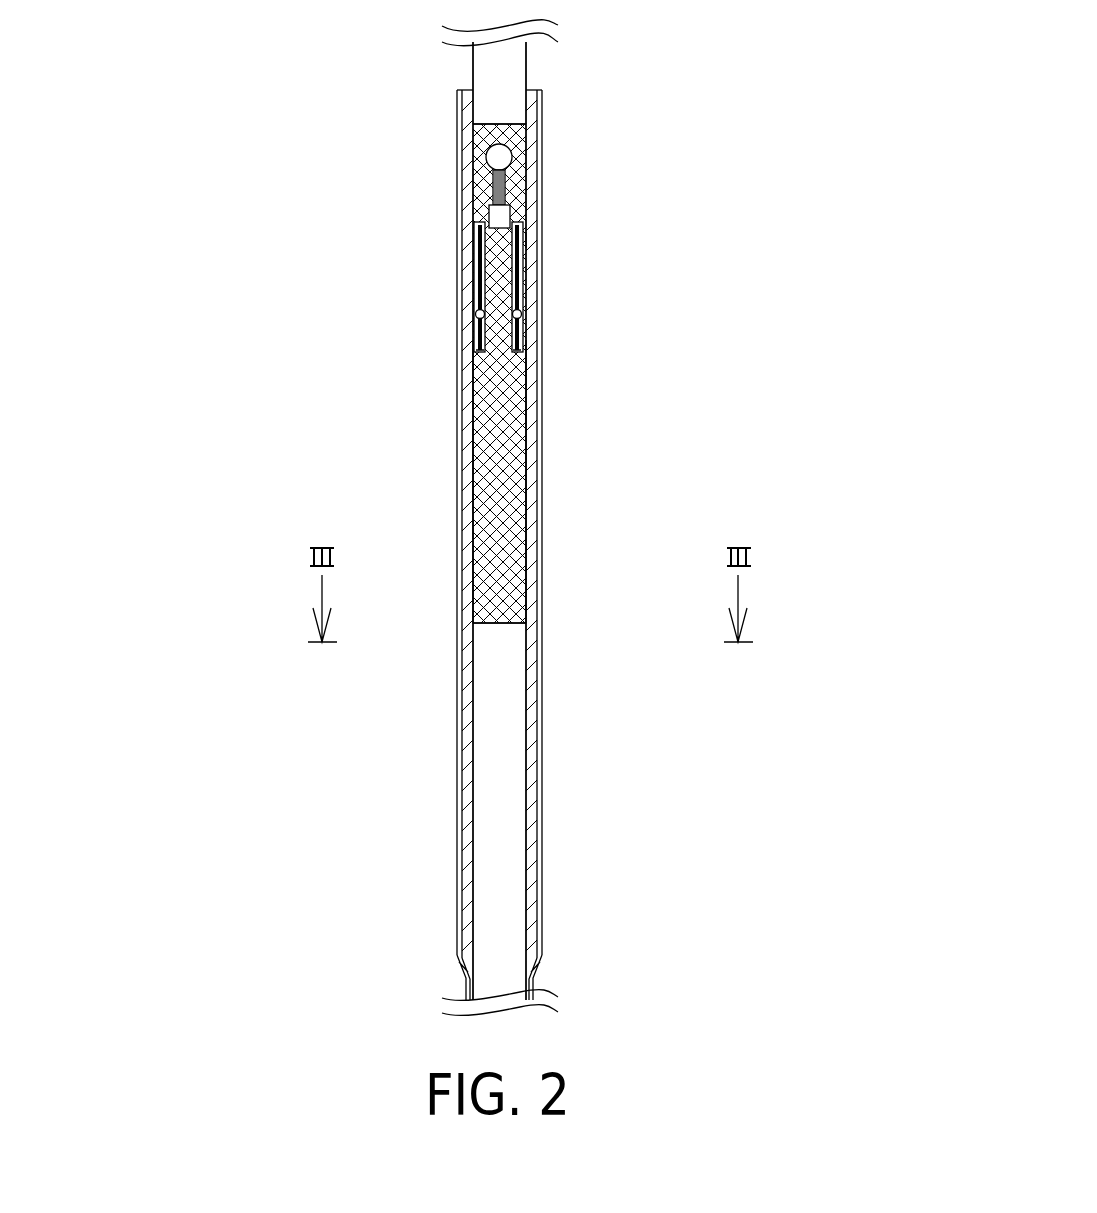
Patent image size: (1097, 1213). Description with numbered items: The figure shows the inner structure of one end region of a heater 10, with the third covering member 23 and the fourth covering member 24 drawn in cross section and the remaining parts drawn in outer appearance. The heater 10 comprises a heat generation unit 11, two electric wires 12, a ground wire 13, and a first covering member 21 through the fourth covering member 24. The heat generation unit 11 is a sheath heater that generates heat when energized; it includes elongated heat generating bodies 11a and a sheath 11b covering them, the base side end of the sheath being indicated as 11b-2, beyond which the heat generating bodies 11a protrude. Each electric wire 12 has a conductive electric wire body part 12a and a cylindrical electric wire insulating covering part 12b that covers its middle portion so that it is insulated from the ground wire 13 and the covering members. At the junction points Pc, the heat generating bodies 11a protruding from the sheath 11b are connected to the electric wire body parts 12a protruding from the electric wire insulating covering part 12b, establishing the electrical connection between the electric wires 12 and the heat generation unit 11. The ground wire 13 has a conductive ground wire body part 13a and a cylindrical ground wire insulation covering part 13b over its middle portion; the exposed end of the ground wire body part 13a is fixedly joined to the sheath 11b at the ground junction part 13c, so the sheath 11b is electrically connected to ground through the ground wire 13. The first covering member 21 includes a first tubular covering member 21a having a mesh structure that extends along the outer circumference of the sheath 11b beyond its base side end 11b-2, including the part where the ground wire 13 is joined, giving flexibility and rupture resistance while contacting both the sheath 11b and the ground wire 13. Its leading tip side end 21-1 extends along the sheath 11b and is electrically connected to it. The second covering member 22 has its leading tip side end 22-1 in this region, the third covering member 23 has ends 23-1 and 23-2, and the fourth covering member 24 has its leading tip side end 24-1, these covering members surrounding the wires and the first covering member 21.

The heater 10 is at (768, 59).
The heat generation unit 11 is at (576, 521).
The heat generating bodies 11a is at (476, 262).
The sheath 11b is at (518, 61).
The base side end of the sheath 11b-2 is at (527, 238).
The electric wires 12 is at (499, 422).
The electric wire body part 12a is at (474, 340).
The electric wire insulating covering part 12b is at (526, 346).
The ground wire 13 is at (532, 187).
The ground wire body part 13a is at (493, 185).
The ground wire insulation covering part 13b is at (489, 215).
The ground junction part 13c is at (512, 152).
The first covering member 21 is at (476, 335).
The first tubular covering member 21a is at (482, 449).
The leading tip side end of the first covering member 21-1 is at (493, 124).
The second covering member 22 is at (508, 797).
The leading tip side end of the second covering member 22-1 is at (526, 627).
The third covering member 23 is at (536, 712).
The leading tip side end of the third covering member 23-1 is at (537, 88).
The base side end of the third covering member 23-2 is at (538, 965).
The fourth covering member 24 is at (542, 665).
The leading tip side end of the fourth covering member 24-1 is at (457, 91).
The junction points Pc is at (605, 325).